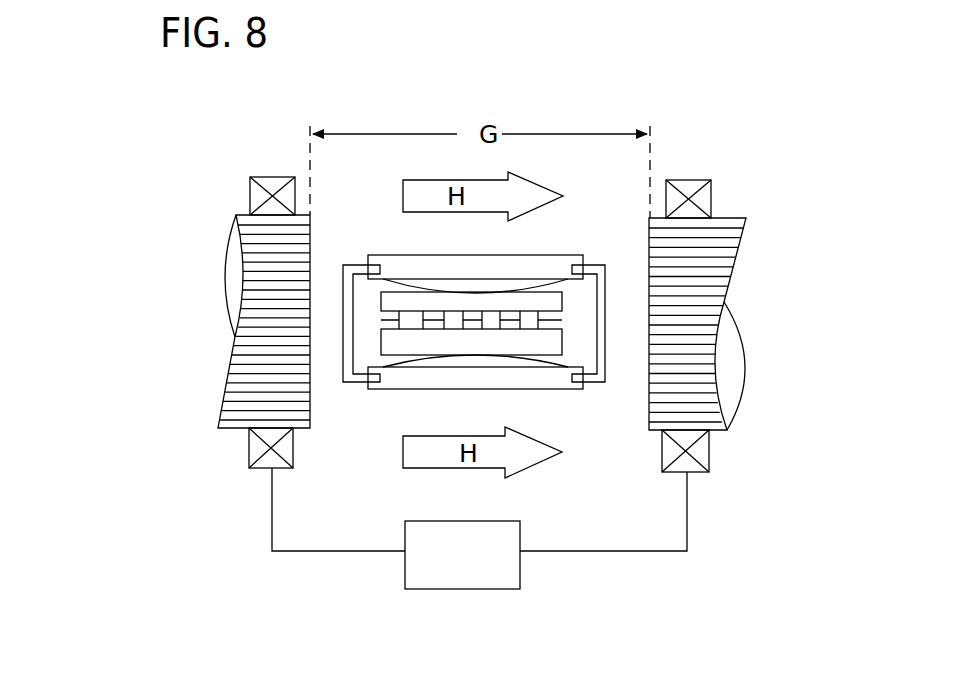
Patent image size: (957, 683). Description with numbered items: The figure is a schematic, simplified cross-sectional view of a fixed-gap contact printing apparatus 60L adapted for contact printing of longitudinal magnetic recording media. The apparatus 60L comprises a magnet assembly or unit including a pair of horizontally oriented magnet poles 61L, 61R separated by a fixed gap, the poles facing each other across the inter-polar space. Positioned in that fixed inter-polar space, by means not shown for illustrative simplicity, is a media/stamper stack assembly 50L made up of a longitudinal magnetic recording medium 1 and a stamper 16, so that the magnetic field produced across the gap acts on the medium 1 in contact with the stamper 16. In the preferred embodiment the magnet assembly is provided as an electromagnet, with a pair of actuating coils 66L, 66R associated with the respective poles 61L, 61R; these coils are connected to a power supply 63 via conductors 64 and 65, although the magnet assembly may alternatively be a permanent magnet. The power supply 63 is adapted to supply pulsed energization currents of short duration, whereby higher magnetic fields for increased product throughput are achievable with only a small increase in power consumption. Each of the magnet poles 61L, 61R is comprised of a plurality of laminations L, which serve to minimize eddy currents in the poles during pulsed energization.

The fixed-gap contact printing apparatus 60L is at (130, 200).
The magnet pole 61L is at (221, 238).
The actuating coil 66L is at (267, 176).
The laminations L is at (218, 400).
The media/stamper stack assembly 50L is at (588, 252).
The longitudinal magnetic recording medium 1 is at (558, 300).
The stamper 16 is at (552, 343).
The actuating coil 66R is at (716, 186).
The magnet pole 61R is at (754, 217).
The power supply 63 is at (462, 555).
The conductor 64 is at (335, 553).
The conductor 65 is at (603, 555).